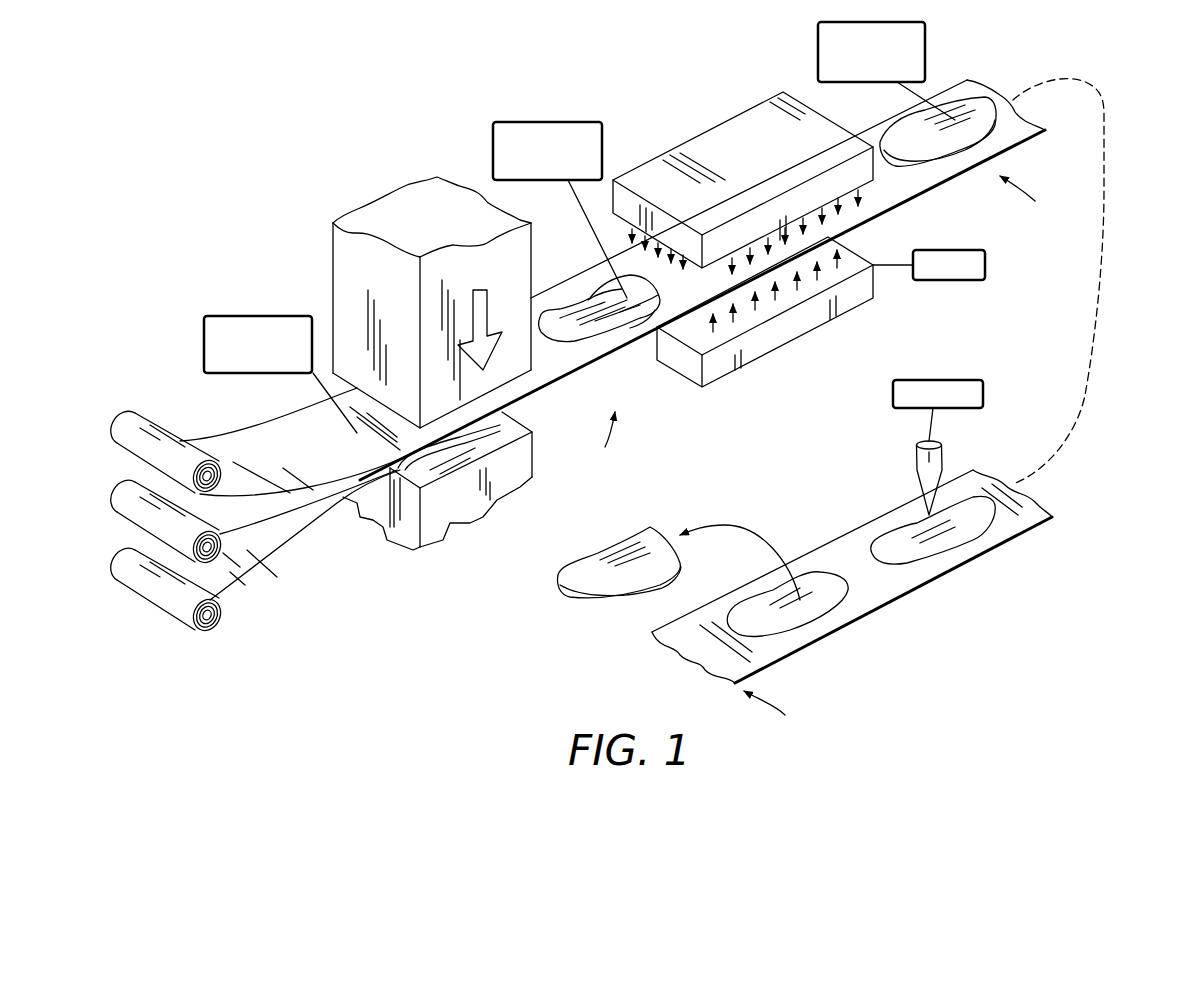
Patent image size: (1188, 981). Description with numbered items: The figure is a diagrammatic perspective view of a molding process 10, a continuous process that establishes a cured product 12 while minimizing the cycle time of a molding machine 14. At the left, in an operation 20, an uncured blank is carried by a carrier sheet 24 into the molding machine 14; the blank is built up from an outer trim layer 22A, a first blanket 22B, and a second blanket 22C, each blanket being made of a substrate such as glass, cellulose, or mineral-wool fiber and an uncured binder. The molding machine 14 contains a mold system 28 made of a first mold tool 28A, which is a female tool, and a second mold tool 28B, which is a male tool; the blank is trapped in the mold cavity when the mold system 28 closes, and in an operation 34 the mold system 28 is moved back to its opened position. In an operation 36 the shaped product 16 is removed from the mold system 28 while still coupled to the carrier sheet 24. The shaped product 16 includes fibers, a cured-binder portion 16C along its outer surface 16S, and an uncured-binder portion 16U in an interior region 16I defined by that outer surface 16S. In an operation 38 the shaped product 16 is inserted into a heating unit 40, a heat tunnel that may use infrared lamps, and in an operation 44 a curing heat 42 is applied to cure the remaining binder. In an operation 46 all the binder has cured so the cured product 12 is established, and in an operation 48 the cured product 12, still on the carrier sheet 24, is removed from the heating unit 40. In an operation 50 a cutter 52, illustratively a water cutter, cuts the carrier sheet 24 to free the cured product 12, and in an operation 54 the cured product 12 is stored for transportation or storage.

The molding process 10 is at (1094, 263).
The cured product 12 is at (926, 52).
The molding machine 14 is at (419, 379).
The shaped product 16 is at (611, 265).
The cured-binder portion 16C is at (578, 330).
The interior region 16I is at (596, 315).
The outer surface 16S is at (683, 323).
The uncured-binder portion 16U is at (647, 316).
The operation 20 is at (391, 522).
The outer trim layer 22A is at (293, 496).
The first blanket 22B is at (240, 532).
The second blanket 22C is at (232, 594).
The carrier sheet 24 is at (521, 388).
The mold system 28 is at (450, 492).
The first mold tool 28A is at (380, 366).
The second mold tool 28B is at (463, 457).
The operation 34 is at (499, 473).
The operation 36 is at (607, 439).
The operation 38 is at (799, 262).
The heating unit 40 is at (748, 136).
The curing heat 42 is at (949, 281).
The operation 44 is at (802, 346).
The operation 46 is at (1028, 197).
The operation 48 is at (1042, 152).
The operation 50 is at (972, 483).
The cutter 52 is at (983, 383).
The operation 54 is at (775, 711).